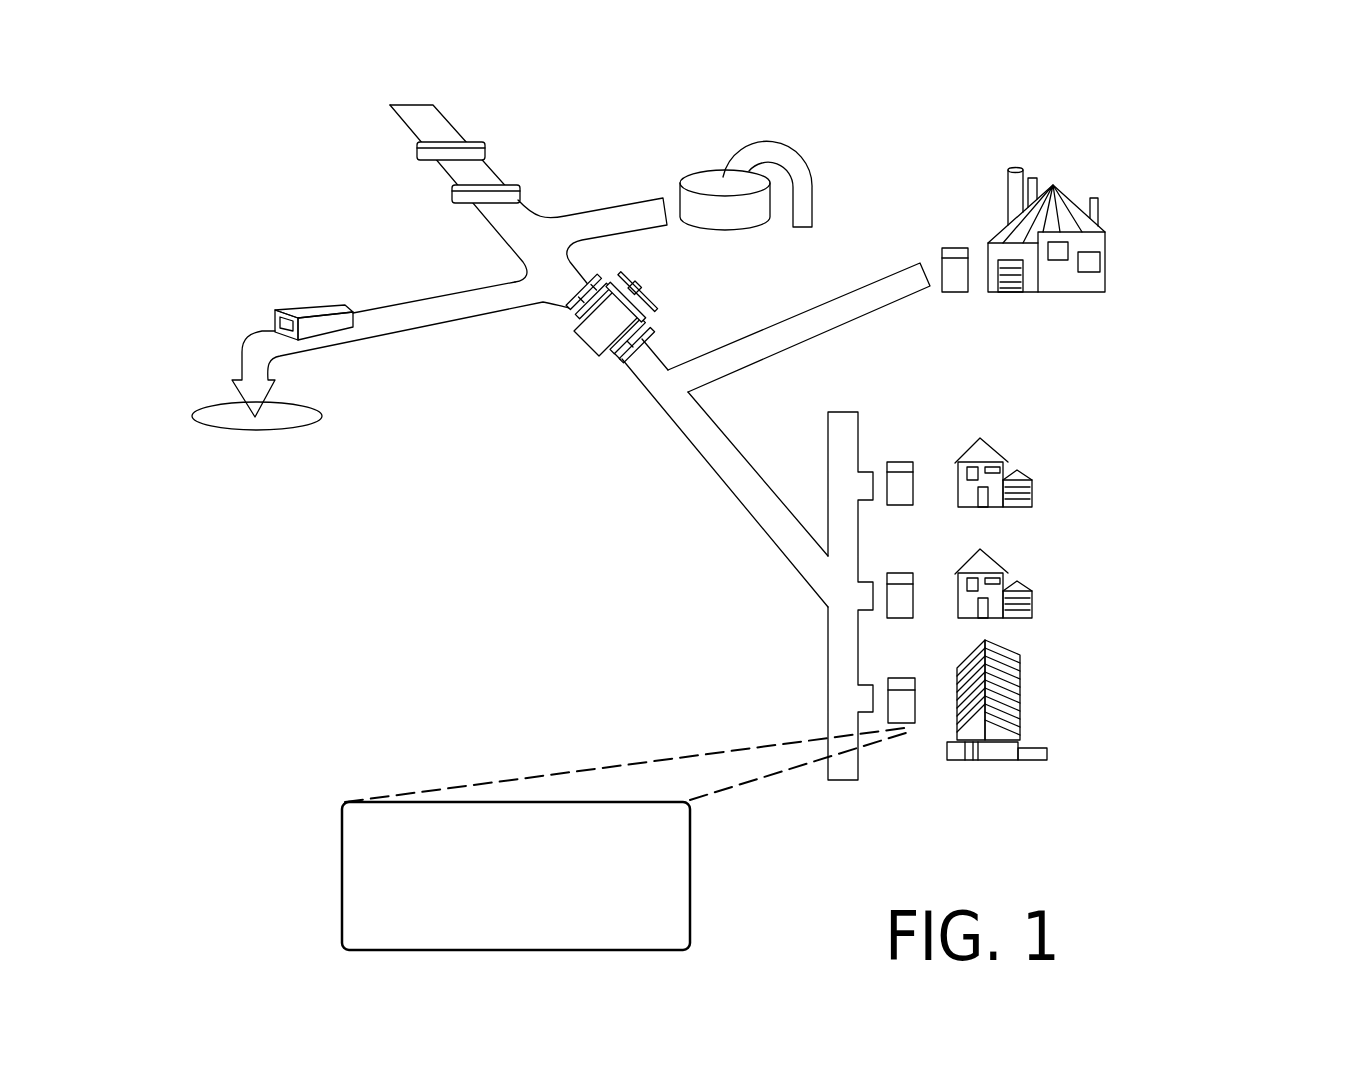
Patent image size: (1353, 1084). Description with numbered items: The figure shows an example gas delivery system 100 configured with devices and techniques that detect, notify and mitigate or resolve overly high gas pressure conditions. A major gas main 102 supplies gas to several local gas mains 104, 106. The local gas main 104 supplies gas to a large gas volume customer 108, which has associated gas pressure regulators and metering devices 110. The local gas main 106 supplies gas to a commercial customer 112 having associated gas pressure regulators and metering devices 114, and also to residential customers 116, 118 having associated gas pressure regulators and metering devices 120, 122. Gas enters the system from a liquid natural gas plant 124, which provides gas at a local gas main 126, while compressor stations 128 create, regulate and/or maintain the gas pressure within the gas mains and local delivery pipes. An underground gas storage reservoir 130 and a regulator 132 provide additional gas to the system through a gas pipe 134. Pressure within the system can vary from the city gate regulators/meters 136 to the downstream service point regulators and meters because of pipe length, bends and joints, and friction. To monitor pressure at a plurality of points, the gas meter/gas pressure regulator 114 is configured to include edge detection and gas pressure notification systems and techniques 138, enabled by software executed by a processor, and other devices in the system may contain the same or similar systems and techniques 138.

The gas delivery system 100 is at (1211, 75).
The major gas main 102 is at (708, 490).
The local gas main 104 is at (803, 346).
The local gas main 106 is at (824, 669).
The large gas volume customer 108 is at (1087, 182).
The gas pressure regulators and metering devices 110 is at (957, 298).
The commercial customer 112 is at (1027, 727).
The gas pressure regulators and metering devices 114 is at (917, 728).
The residential customer 116 is at (1042, 482).
The residential customer 118 is at (1042, 598).
The gas pressure regulators and metering devices 120 is at (922, 462).
The gas pressure regulators and metering devices 122 is at (922, 617).
The liquid natural gas (LNG) plant 124 is at (770, 200).
The local gas main 126 is at (610, 190).
The compressor stations 128 is at (418, 157).
The underground gas storage reservoir 130 is at (243, 400).
The regulator 132 is at (313, 305).
The gas pipe 134 is at (448, 325).
The city gate regulators/meters 136 is at (640, 283).
The edge detection and gas pressure notification systems and techniques 138 is at (537, 936).